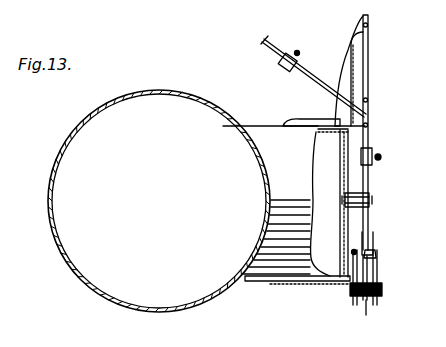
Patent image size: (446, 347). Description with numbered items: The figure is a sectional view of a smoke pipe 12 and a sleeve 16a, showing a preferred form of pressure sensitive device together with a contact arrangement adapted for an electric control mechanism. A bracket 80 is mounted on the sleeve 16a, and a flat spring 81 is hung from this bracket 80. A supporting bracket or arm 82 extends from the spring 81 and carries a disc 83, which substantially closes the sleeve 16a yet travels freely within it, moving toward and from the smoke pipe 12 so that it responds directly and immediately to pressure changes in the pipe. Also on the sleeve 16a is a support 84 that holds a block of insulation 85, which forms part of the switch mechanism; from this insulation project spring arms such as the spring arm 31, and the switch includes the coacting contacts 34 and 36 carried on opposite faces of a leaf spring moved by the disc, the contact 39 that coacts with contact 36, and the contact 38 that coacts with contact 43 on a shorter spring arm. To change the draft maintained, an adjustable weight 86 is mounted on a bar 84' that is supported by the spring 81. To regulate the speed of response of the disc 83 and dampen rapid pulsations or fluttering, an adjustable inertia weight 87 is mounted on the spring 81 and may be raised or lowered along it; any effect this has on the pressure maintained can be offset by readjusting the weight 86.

The smoke pipe 12 is at (188, 95).
The sleeve 16a is at (276, 201).
The bracket 80 is at (348, 52).
The flat spring 81 is at (370, 79).
The supporting bracket or arm 82 is at (362, 198).
The disc 83 is at (343, 176).
The support 84 is at (297, 298).
The bar 84' is at (295, 76).
The block of insulation 85 is at (366, 308).
The adjustable weight 86 is at (285, 70).
The adjustable inertia weight 87 is at (372, 152).
The spring arm 31 is at (376, 268).
The contact 34 is at (376, 251).
The contact 36 is at (368, 236).
The contact 38 is at (366, 282).
The contact 39 is at (352, 250).
The contact 43 is at (368, 266).